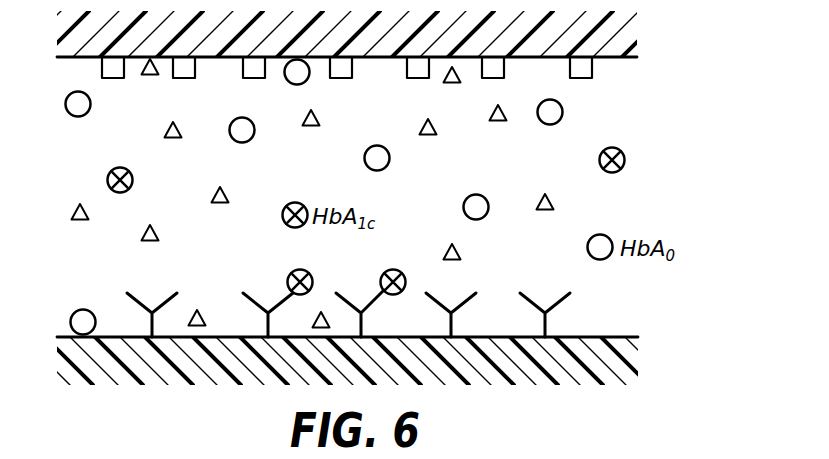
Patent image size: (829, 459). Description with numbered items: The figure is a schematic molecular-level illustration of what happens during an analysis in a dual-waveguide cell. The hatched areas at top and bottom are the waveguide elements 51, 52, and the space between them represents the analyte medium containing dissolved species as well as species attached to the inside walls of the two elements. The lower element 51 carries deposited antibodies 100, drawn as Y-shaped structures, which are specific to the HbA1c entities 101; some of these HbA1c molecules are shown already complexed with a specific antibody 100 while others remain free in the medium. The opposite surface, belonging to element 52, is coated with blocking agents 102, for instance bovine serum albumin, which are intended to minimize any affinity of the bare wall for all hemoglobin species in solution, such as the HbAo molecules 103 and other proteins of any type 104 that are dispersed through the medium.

The waveguide element 51 is at (618, 358).
The waveguide element 52 is at (612, 25).
The antibodies 100 is at (250, 292).
The HbA1c entities 101 is at (133, 180).
The blocking agents 102 is at (415, 68).
The HbAo 103 is at (364, 158).
The other proteins 104 is at (535, 198).